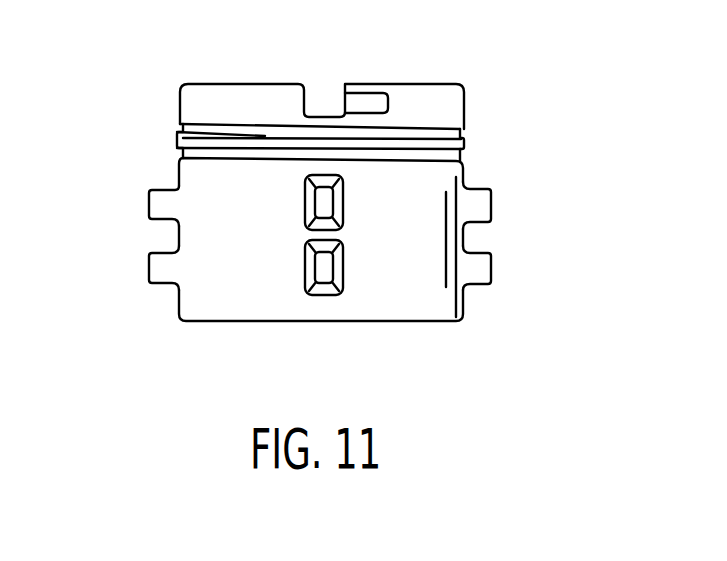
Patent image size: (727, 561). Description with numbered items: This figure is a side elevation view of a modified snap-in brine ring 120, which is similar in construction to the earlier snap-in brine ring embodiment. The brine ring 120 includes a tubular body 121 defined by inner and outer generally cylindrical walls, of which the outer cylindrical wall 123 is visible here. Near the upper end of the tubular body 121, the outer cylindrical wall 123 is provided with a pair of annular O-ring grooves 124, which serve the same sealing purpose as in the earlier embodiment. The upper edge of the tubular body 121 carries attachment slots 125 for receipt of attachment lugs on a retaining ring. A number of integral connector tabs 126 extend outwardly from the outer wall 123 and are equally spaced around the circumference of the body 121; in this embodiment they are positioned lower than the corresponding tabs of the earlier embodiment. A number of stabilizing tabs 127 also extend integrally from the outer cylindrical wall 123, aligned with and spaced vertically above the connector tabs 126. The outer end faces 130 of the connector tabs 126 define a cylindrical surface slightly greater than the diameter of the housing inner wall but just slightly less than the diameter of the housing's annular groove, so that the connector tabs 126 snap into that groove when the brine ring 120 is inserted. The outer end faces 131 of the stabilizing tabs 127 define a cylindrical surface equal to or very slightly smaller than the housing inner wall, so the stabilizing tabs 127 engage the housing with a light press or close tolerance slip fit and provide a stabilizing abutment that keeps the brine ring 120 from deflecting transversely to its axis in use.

The modified brine ring 120 is at (332, 207).
The tubular body 121 is at (242, 287).
The outer cylindrical wall 123 is at (442, 292).
The annular O-ring grooves 124 is at (458, 155).
The attachment slots 125 is at (325, 103).
The connector tabs 126 is at (156, 272).
The stabilizing tabs 127 is at (162, 195).
The outer end faces of the connector tabs 130 is at (150, 265).
The outer end faces of the stabilizing tabs 131 is at (325, 207).